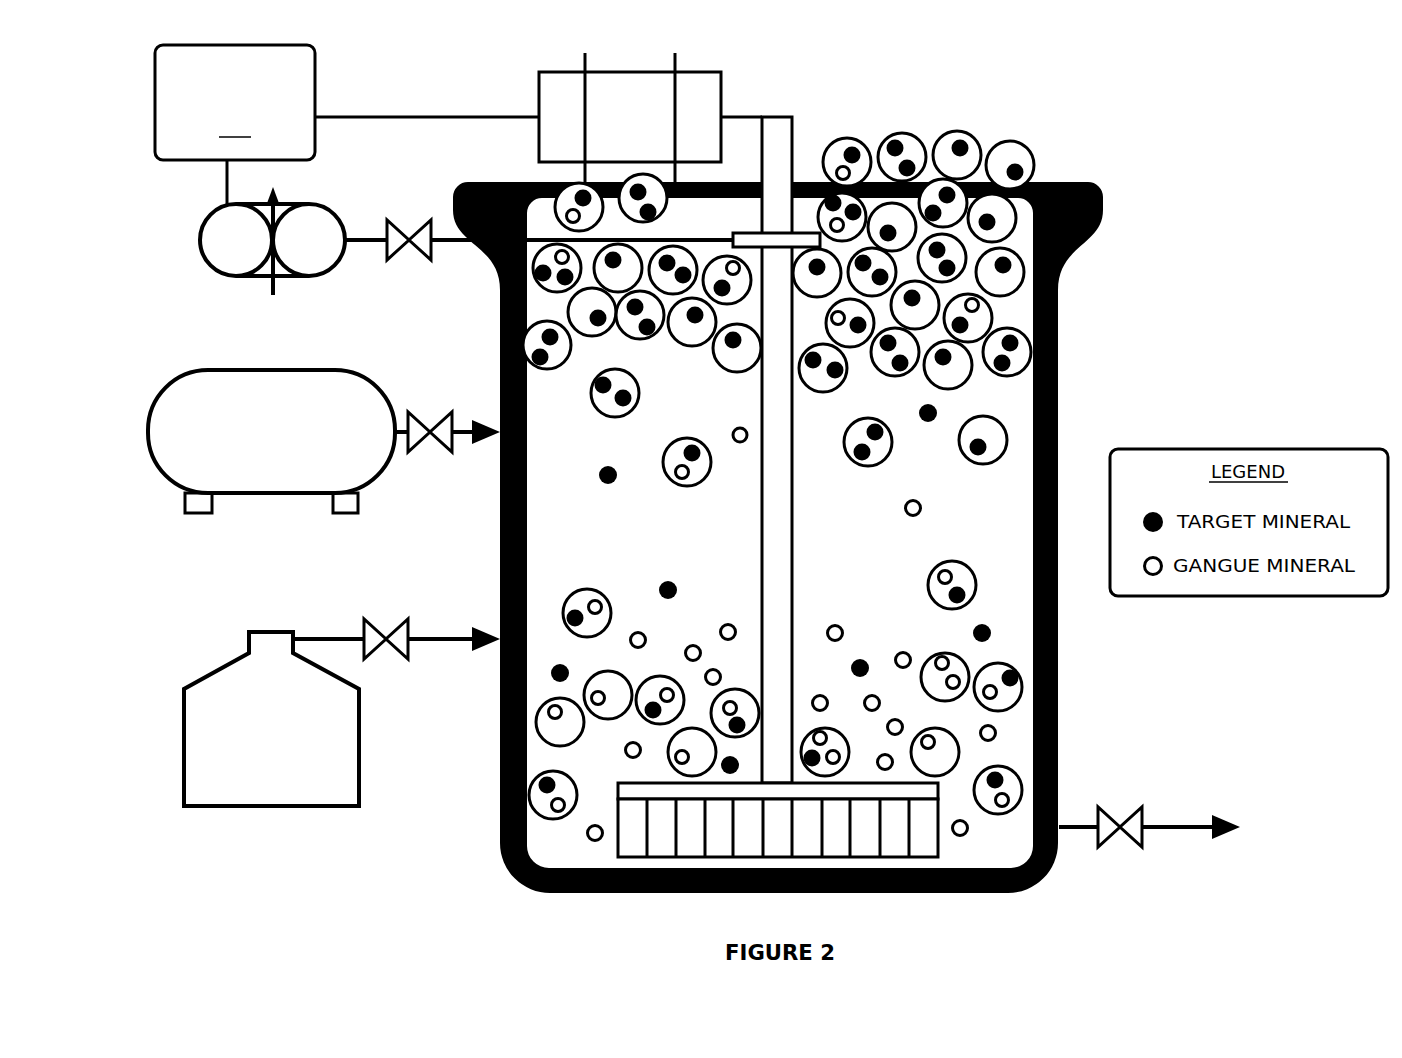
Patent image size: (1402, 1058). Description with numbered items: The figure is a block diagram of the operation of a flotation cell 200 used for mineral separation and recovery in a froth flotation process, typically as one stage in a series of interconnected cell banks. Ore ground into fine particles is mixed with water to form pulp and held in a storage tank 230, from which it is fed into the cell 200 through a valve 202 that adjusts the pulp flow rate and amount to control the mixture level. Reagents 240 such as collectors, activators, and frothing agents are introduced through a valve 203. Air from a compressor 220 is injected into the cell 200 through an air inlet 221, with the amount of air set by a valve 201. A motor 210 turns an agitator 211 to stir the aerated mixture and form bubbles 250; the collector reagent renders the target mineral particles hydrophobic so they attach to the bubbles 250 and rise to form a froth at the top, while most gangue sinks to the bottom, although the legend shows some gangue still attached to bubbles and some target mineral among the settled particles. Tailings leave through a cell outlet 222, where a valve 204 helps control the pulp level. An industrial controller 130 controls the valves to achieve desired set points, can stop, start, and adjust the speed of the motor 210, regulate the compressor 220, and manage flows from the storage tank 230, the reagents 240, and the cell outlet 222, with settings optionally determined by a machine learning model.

The industrial controller 130 is at (347, 124).
The flotation cell 200 is at (1103, 205).
The valve 201 is at (408, 236).
The valve 202 is at (430, 425).
The valve 203 is at (388, 636).
The valve 204 is at (1120, 823).
The motor 210 is at (539, 97).
The agitator 211 is at (618, 792).
The compressor 220 is at (200, 218).
The air inlet 221 is at (733, 239).
The cell outlet 222 is at (1180, 827).
The storage tank 230 is at (195, 372).
The reagents 240 is at (244, 650).
The bubbles 250 is at (1030, 146).